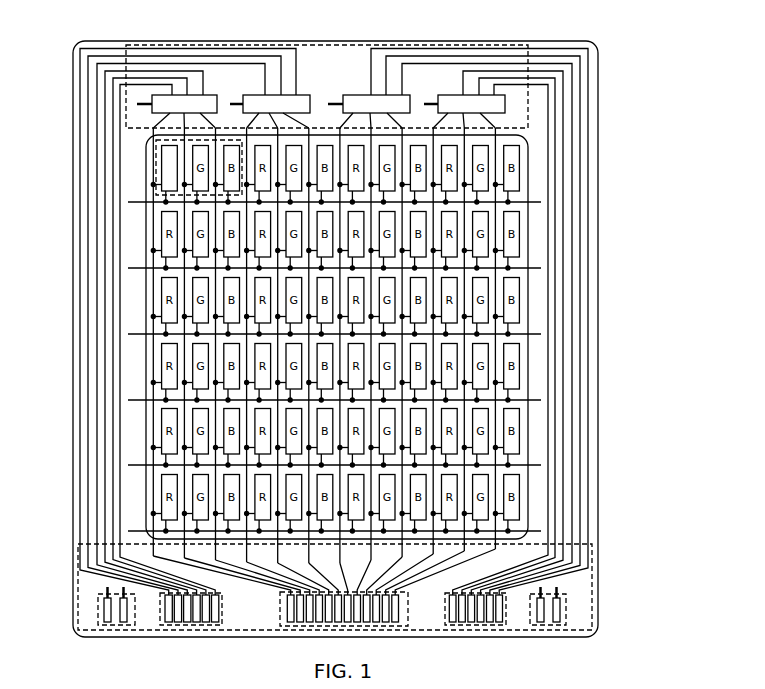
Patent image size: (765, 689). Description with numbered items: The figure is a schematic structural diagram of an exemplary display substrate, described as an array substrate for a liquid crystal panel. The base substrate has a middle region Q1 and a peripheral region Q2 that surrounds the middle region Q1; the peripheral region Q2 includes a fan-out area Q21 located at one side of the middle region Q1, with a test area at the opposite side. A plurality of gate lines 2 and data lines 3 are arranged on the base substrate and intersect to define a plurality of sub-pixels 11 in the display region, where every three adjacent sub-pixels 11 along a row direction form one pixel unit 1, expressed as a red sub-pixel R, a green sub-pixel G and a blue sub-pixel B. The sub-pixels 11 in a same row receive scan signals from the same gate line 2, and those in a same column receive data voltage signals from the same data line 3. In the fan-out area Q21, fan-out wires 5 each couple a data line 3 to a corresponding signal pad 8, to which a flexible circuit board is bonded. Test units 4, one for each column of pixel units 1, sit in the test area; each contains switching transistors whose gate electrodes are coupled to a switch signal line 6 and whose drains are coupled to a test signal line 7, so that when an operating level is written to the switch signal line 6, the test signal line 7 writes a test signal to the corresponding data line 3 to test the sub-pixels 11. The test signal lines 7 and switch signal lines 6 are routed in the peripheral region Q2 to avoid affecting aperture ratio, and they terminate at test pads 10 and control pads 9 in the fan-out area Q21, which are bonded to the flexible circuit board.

The pixel unit 1 is at (141, 170).
The gate line 2 is at (140, 268).
The data line 3 is at (153, 236).
The test unit 4 is at (210, 95).
The fan-out wire 5 is at (417, 580).
The switch signal line 6 is at (337, 103).
The test signal line 7 is at (75, 478).
The signal pad 8 is at (408, 612).
The control pad 9 is at (135, 610).
The test pad 10 is at (222, 612).
The sub-pixel 11 is at (158, 158).
The middle region Q1 is at (335, 337).
The peripheral region Q2 is at (351, 339).
The fan-out area Q21 is at (322, 58).